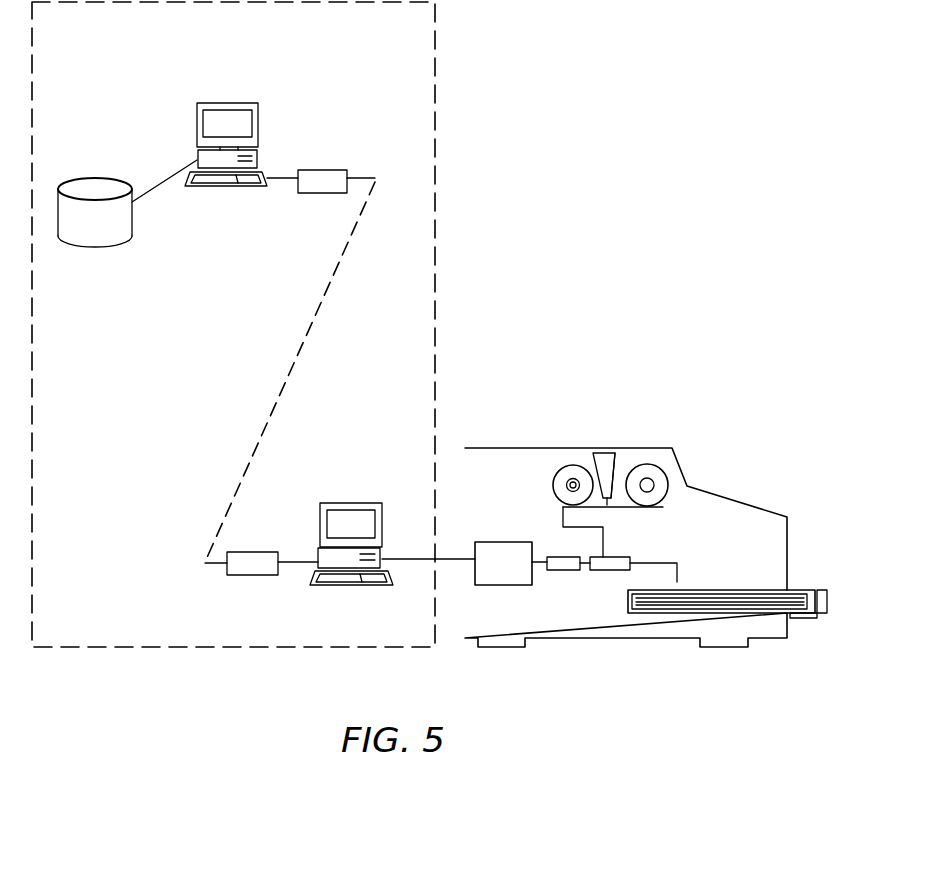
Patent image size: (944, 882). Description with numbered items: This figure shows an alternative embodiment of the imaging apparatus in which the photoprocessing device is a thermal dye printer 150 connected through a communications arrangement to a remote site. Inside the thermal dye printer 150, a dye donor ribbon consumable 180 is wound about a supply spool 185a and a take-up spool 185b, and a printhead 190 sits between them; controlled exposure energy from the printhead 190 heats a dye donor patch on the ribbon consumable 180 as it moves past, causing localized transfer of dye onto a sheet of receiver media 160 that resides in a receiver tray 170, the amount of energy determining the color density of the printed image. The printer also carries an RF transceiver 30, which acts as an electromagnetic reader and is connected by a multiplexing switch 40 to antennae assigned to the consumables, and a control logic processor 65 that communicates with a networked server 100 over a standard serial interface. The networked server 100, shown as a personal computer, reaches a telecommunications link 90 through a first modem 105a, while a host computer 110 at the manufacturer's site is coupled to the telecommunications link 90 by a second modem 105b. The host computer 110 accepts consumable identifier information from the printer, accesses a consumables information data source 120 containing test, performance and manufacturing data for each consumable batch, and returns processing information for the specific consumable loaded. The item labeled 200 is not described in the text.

The RF transceiver 30 is at (567, 572).
The multiplexing switch 40 is at (622, 558).
The control logic processor 65 is at (500, 542).
The telecommunications link 90 is at (350, 287).
The networked server 100 is at (362, 503).
The first modem 105a is at (253, 575).
The second modem 105b is at (323, 170).
The host computer 110 is at (230, 103).
The consumables information data source 120 is at (97, 183).
The thermal dye printer 150 is at (672, 337).
The receiver media 160 is at (793, 592).
The receiver tray 170 is at (827, 598).
The dye donor ribbon consumable 180 is at (580, 465).
The supply spool 185a is at (575, 483).
The take-up spool 185b is at (652, 481).
The printhead 190 is at (616, 458).
The reel hub 200 is at (572, 485).